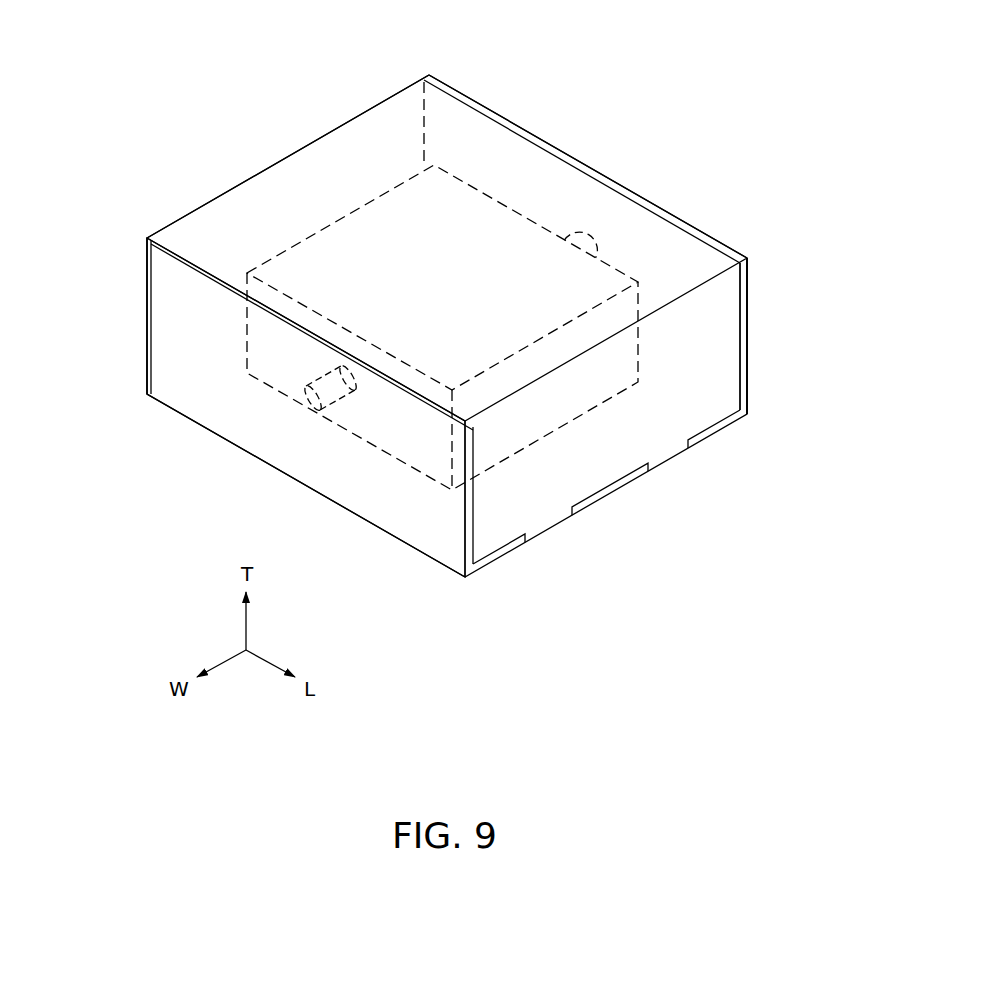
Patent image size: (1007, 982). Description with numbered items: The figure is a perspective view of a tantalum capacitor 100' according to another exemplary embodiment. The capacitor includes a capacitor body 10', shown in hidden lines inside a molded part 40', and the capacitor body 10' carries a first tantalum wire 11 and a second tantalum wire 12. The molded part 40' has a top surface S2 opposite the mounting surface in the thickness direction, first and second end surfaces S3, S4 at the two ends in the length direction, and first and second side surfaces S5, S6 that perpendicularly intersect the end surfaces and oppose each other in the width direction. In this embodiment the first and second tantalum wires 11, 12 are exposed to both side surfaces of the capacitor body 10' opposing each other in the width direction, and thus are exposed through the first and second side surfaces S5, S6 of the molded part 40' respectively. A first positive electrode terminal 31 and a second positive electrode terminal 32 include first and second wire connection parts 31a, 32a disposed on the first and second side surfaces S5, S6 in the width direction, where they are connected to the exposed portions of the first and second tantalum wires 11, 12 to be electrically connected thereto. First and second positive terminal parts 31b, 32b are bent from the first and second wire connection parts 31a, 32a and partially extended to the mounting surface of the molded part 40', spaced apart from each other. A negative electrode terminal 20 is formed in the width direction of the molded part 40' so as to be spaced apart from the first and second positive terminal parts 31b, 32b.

The tantalum capacitor 100' is at (441, 297).
The molded part 40' is at (447, 297).
The capacitor body 10' is at (442, 293).
The first tantalum wire 11 is at (312, 374).
The second tantalum wire 12 is at (587, 231).
The negative electrode terminal 20 is at (610, 497).
The first positive electrode terminal 31 is at (341, 471).
The first wire connection part 31a is at (402, 528).
The first positive terminal part 31b is at (524, 556).
The second positive electrode terminal 32 is at (761, 397).
The second wire connection part 32a is at (747, 362).
The second positive terminal part 32b is at (724, 454).
The top surface S2 is at (492, 162).
The first end surface S3 is at (272, 191).
The second end surface S4 is at (723, 318).
The first side surface S5 is at (171, 313).
The second side surface S6 is at (676, 250).